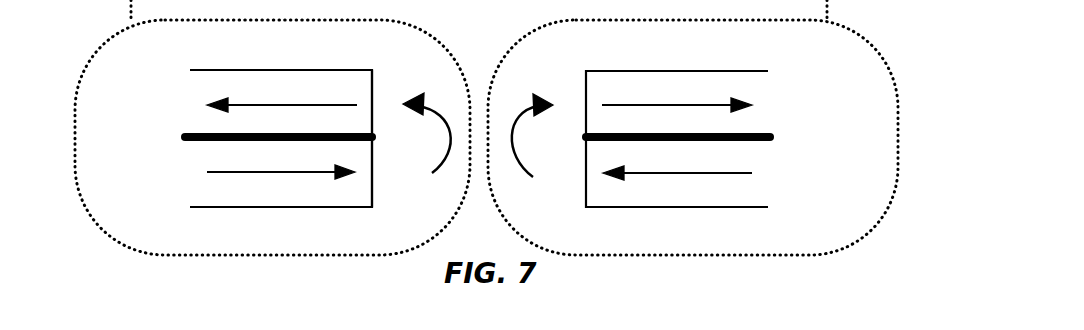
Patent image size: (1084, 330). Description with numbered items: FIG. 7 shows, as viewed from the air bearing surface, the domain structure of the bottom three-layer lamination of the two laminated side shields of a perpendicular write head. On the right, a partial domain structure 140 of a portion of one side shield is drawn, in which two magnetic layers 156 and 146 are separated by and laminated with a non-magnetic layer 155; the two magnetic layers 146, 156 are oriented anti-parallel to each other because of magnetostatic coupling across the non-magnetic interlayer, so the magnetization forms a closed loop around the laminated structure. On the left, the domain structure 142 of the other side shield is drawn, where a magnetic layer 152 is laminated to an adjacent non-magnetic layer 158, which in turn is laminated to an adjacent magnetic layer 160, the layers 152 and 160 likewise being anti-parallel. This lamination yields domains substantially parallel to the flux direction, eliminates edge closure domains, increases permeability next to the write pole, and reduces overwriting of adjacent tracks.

The partial domain structure of the side shield 140 is at (765, 108).
The domain structure of the side shield 142 is at (170, 130).
The magnetic layer 146 is at (668, 90).
The magnetic layer 152 is at (290, 87).
The non-magnetic layer 155 is at (770, 137).
The magnetic layer 156 is at (668, 192).
The non-magnetic layer 158 is at (372, 138).
The magnetic layer 160 is at (291, 188).